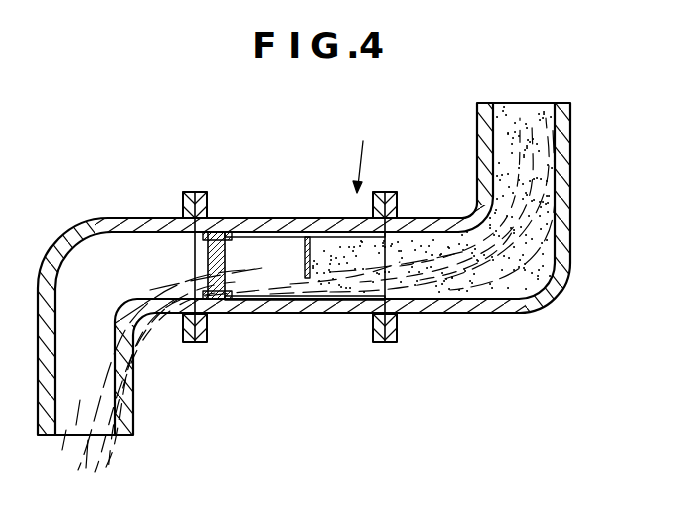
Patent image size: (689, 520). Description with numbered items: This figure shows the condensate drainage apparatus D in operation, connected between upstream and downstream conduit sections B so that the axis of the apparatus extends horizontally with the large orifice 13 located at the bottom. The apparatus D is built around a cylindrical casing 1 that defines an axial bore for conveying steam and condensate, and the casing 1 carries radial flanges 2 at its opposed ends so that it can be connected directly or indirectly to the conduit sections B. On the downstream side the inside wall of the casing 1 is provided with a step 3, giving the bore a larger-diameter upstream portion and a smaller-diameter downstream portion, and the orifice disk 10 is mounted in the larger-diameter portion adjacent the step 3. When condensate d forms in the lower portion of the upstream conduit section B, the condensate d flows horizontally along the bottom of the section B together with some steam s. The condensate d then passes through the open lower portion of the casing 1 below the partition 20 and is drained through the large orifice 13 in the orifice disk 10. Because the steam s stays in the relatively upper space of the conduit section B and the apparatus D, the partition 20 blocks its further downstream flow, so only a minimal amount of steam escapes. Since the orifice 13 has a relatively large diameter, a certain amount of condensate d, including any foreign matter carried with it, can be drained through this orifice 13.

The cylindrical casing 1 is at (281, 233).
The radial flange 2 is at (381, 344).
The step 3 is at (198, 344).
The orifice disk 10 is at (235, 265).
The large orifice 13 is at (219, 300).
The partition 20 is at (310, 252).
The conduit section B is at (572, 180).
The condensate drainage apparatus D is at (364, 155).
The steam s is at (512, 122).
The condensate d is at (508, 268).